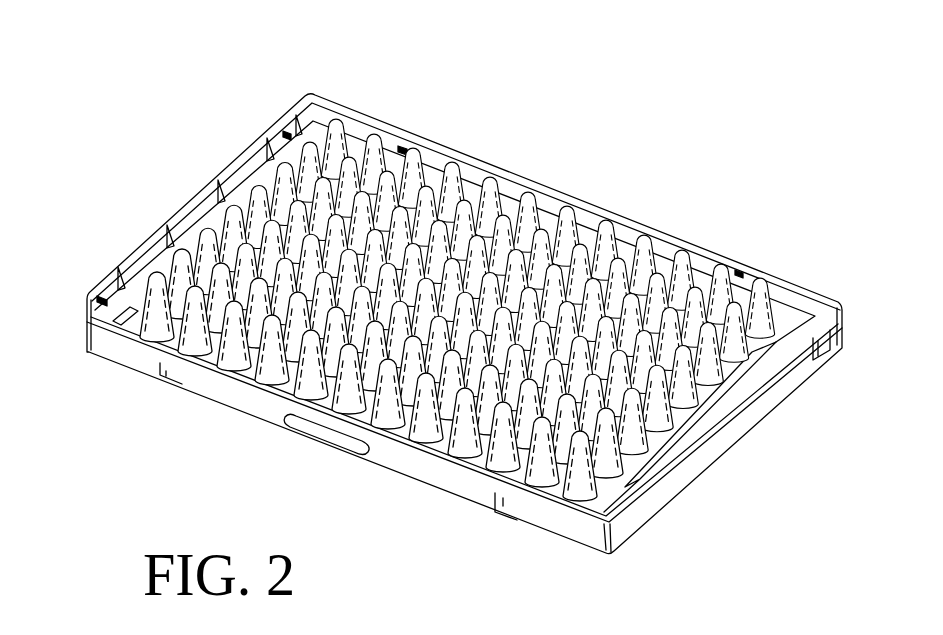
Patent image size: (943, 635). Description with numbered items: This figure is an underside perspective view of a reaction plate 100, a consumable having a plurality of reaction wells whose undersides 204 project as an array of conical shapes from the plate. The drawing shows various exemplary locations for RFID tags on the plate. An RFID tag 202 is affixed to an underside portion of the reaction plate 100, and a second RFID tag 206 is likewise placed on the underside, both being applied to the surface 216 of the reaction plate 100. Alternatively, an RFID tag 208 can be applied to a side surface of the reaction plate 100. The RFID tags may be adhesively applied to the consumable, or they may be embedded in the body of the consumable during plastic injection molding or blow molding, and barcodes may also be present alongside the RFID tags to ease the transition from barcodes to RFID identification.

The reaction plate 100 is at (619, 89).
The RFID tag 202 is at (120, 292).
The undersides of reaction wells 204 is at (521, 190).
The RFID tag 206 is at (773, 357).
The RFID tag 208 is at (310, 426).
The surface of the reaction plate 216 is at (265, 168).